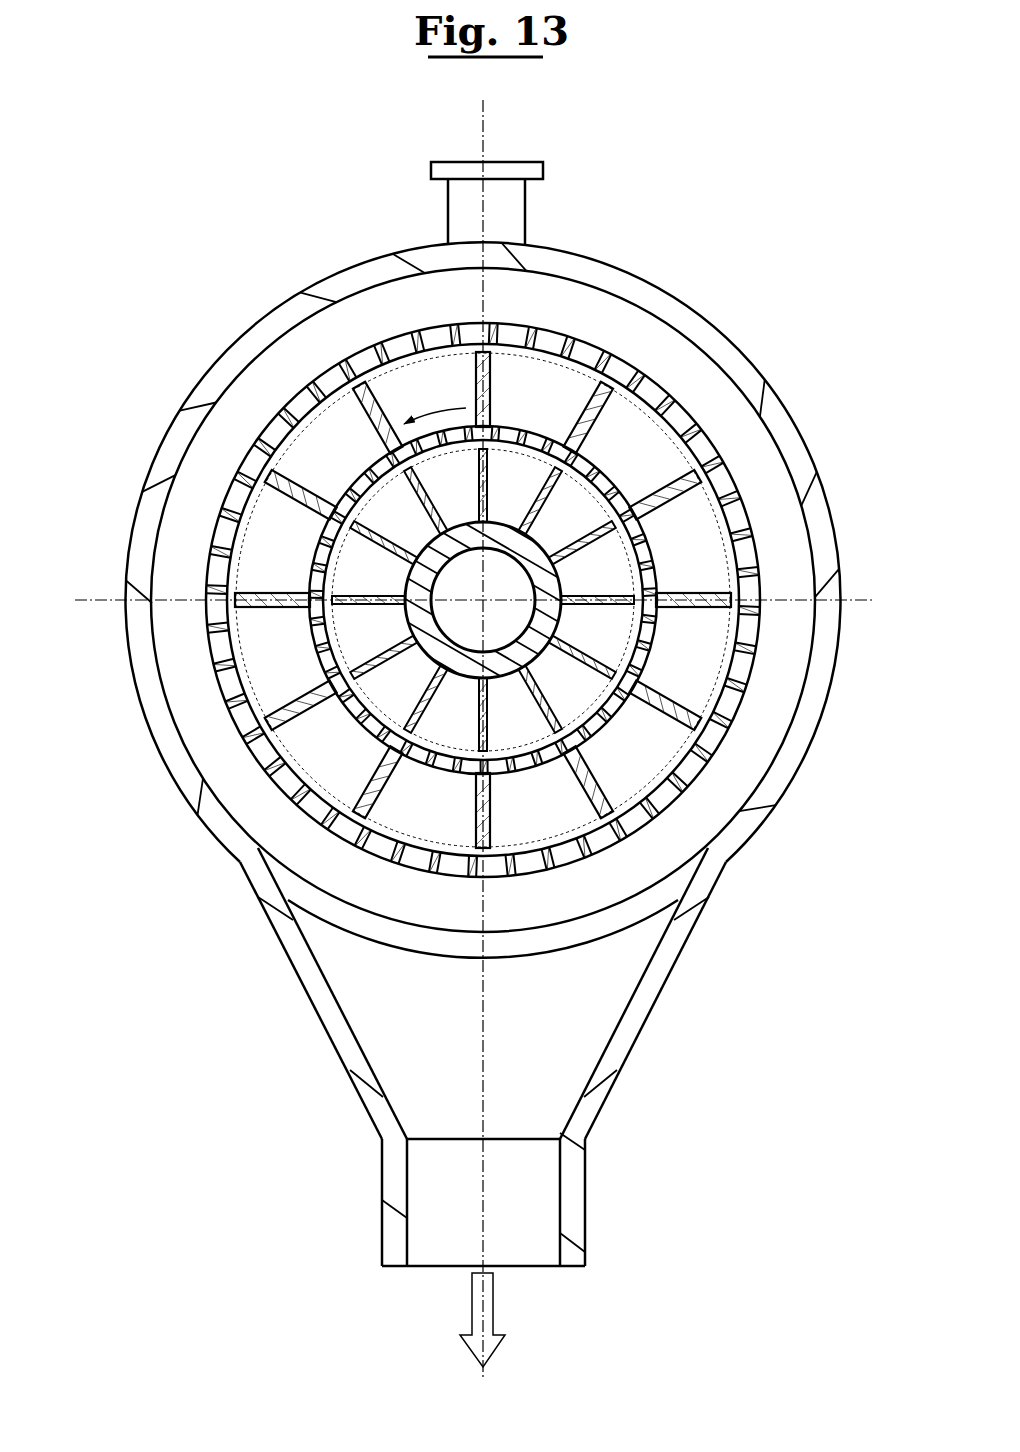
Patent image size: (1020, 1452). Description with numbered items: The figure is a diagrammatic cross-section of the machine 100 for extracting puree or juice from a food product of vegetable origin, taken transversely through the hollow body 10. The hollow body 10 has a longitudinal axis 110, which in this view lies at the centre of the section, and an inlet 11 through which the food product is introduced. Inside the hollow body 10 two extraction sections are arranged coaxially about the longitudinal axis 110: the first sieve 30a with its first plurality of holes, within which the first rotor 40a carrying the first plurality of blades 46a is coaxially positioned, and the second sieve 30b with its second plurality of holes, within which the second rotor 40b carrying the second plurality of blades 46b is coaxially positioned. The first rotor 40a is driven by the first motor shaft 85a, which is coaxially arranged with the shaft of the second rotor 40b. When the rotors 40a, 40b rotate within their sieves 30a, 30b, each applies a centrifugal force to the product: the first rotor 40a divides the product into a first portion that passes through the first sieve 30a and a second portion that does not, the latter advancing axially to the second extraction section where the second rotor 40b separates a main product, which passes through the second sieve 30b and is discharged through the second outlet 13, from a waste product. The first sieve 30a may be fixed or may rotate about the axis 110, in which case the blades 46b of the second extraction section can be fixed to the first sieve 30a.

The machine 100 is at (675, 193).
The hollow body 10 is at (172, 659).
The inlet 11 is at (412, 157).
The second outlet 13 is at (588, 975).
The first sieve 30a is at (310, 672).
The second sieve 30b is at (290, 390).
The first rotor 40a is at (627, 650).
The second rotor 40b is at (243, 518).
The first plurality of blades 46a is at (407, 719).
The second plurality of blades 46b is at (377, 392).
The first motor shaft 85a is at (540, 667).
The longitudinal axis 110 is at (483, 600).